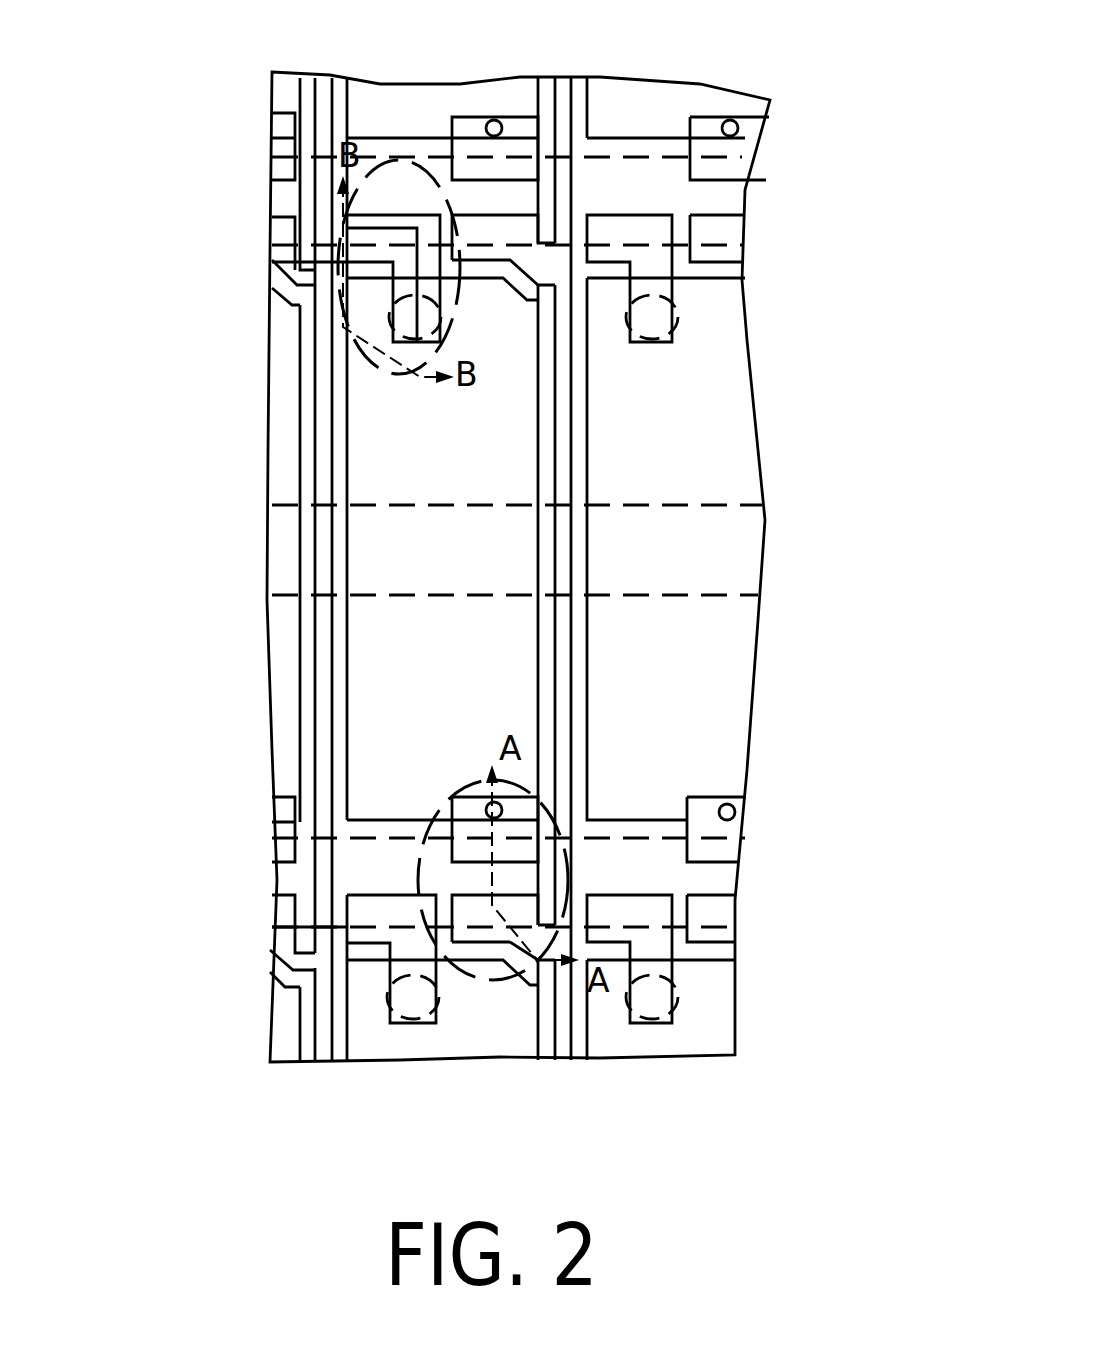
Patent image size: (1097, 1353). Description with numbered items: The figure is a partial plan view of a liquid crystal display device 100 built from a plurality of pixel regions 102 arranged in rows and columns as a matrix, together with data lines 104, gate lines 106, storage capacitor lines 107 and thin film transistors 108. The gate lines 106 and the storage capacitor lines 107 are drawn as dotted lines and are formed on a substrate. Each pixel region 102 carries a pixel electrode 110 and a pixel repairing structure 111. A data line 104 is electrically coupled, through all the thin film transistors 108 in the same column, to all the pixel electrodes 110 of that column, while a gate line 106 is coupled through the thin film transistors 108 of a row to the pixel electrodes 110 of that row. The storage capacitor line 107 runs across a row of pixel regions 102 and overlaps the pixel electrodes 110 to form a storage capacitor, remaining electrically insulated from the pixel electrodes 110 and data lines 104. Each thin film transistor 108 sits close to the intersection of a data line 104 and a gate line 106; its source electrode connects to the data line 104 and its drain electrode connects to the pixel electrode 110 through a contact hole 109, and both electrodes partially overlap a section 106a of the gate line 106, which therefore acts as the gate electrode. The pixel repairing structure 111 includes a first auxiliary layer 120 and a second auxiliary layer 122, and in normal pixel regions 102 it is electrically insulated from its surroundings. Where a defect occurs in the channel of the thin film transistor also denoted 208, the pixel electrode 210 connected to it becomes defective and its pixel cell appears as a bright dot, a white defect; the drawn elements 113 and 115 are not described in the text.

The liquid crystal display device 100 is at (870, 55).
The pixel region 102 is at (342, 438).
The data line 104 is at (563, 95).
The gate line 106 is at (727, 203).
The section of the gate line 106a is at (473, 880).
The storage capacitor line 107 is at (715, 505).
The thin film transistor 108 is at (431, 953).
The thin film transistor 208 is at (460, 973).
The contact hole 109 is at (494, 747).
The pixel electrode 110 is at (471, 669).
The pixel electrode 210 is at (387, 637).
The pixel repairing structure 111 is at (422, 162).
The drain electrode 113 is at (513, 830).
The source electrode 115 is at (555, 950).
The first auxiliary layer 120 is at (290, 258).
The second auxiliary layer 122 is at (393, 314).